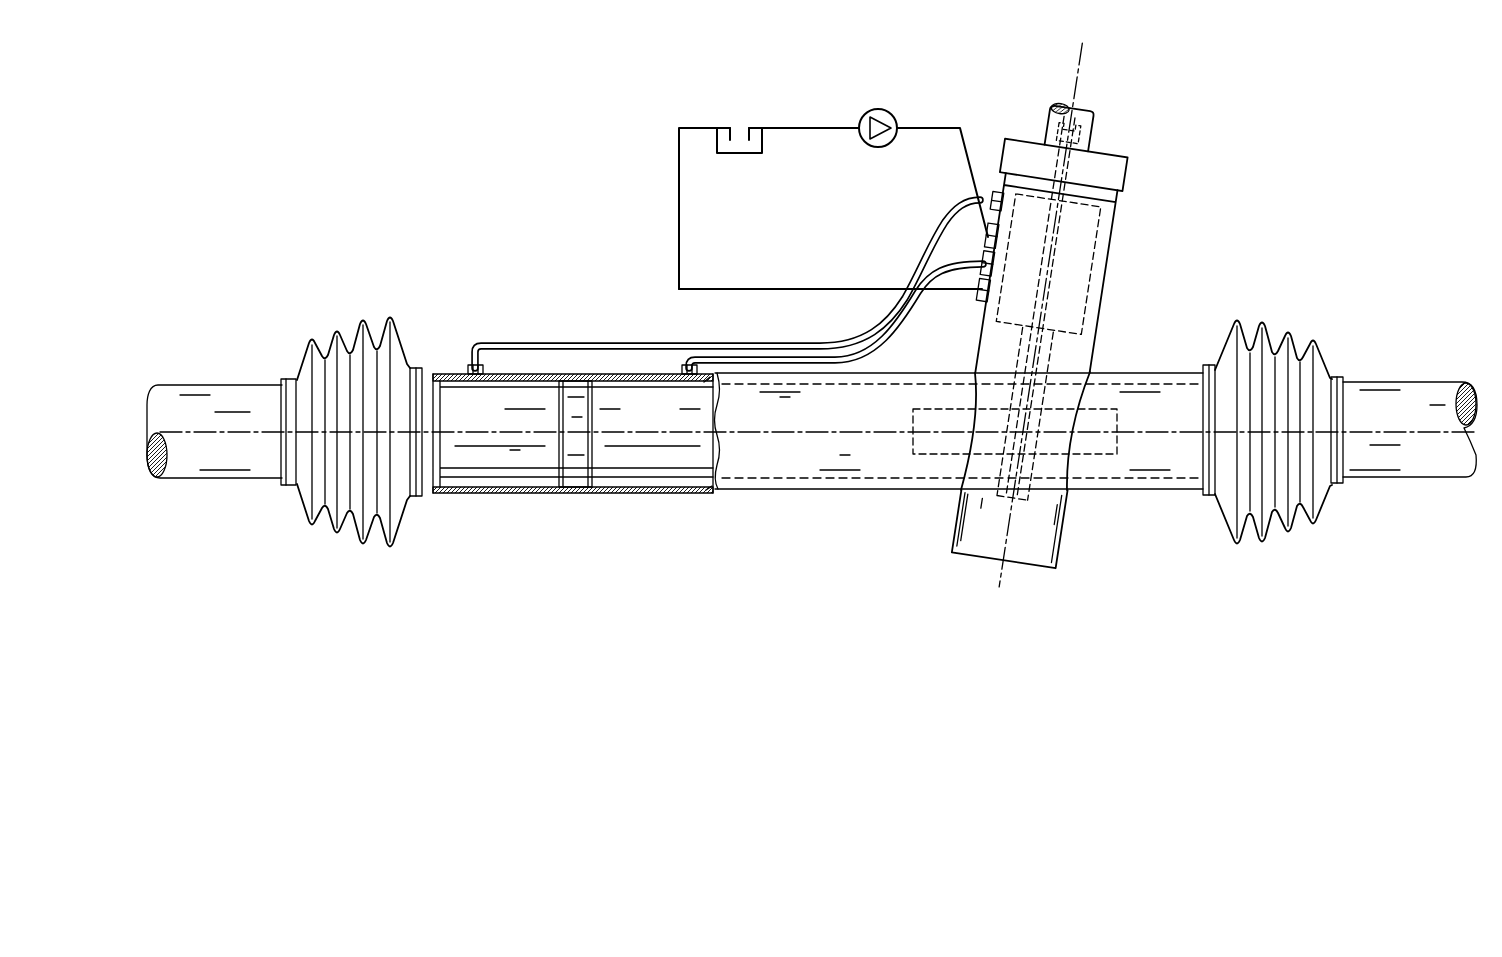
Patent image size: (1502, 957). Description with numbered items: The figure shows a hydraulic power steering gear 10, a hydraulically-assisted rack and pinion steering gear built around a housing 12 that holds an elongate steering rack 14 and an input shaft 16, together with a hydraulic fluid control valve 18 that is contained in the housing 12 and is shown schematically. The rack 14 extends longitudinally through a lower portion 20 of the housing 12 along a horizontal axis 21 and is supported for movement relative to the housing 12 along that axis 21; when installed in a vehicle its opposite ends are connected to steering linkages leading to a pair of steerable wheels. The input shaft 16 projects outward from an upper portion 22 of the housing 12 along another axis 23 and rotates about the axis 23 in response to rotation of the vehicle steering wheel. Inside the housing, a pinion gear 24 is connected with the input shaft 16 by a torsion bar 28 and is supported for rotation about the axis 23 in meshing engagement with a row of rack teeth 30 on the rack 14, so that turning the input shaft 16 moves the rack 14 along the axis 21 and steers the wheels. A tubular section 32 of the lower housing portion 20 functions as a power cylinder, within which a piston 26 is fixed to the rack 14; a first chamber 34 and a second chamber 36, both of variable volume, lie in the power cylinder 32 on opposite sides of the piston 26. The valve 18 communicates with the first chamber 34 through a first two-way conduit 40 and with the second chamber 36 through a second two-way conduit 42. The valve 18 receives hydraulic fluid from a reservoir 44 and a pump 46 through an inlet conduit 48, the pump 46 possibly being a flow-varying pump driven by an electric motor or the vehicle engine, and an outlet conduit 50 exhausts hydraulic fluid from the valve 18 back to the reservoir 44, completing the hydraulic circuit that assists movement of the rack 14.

The hydraulic power steering gear 10 is at (530, 200).
The housing 12 is at (833, 496).
The steering rack 14 is at (527, 379).
The input shaft 16 is at (1054, 120).
The hydraulic fluid control valve 18 is at (1097, 250).
The lower portion of the housing 20 is at (758, 492).
The horizontal axis 21 is at (772, 432).
The upper portion of the housing 22 is at (1093, 347).
The axis 23 is at (1080, 70).
The pinion gear 24 is at (1030, 463).
The piston 26 is at (578, 466).
The torsion bar 28 is at (1055, 282).
The rack teeth 30 is at (947, 443).
The tubular section 32 is at (633, 492).
The first chamber 34 is at (466, 425).
The second chamber 36 is at (633, 425).
The first two-way conduit 40 is at (648, 345).
The second two-way conduit 42 is at (892, 336).
The reservoir 44 is at (740, 155).
The pump 46 is at (868, 110).
The inlet conduit 48 is at (929, 123).
The outlet conduit 50 is at (780, 287).